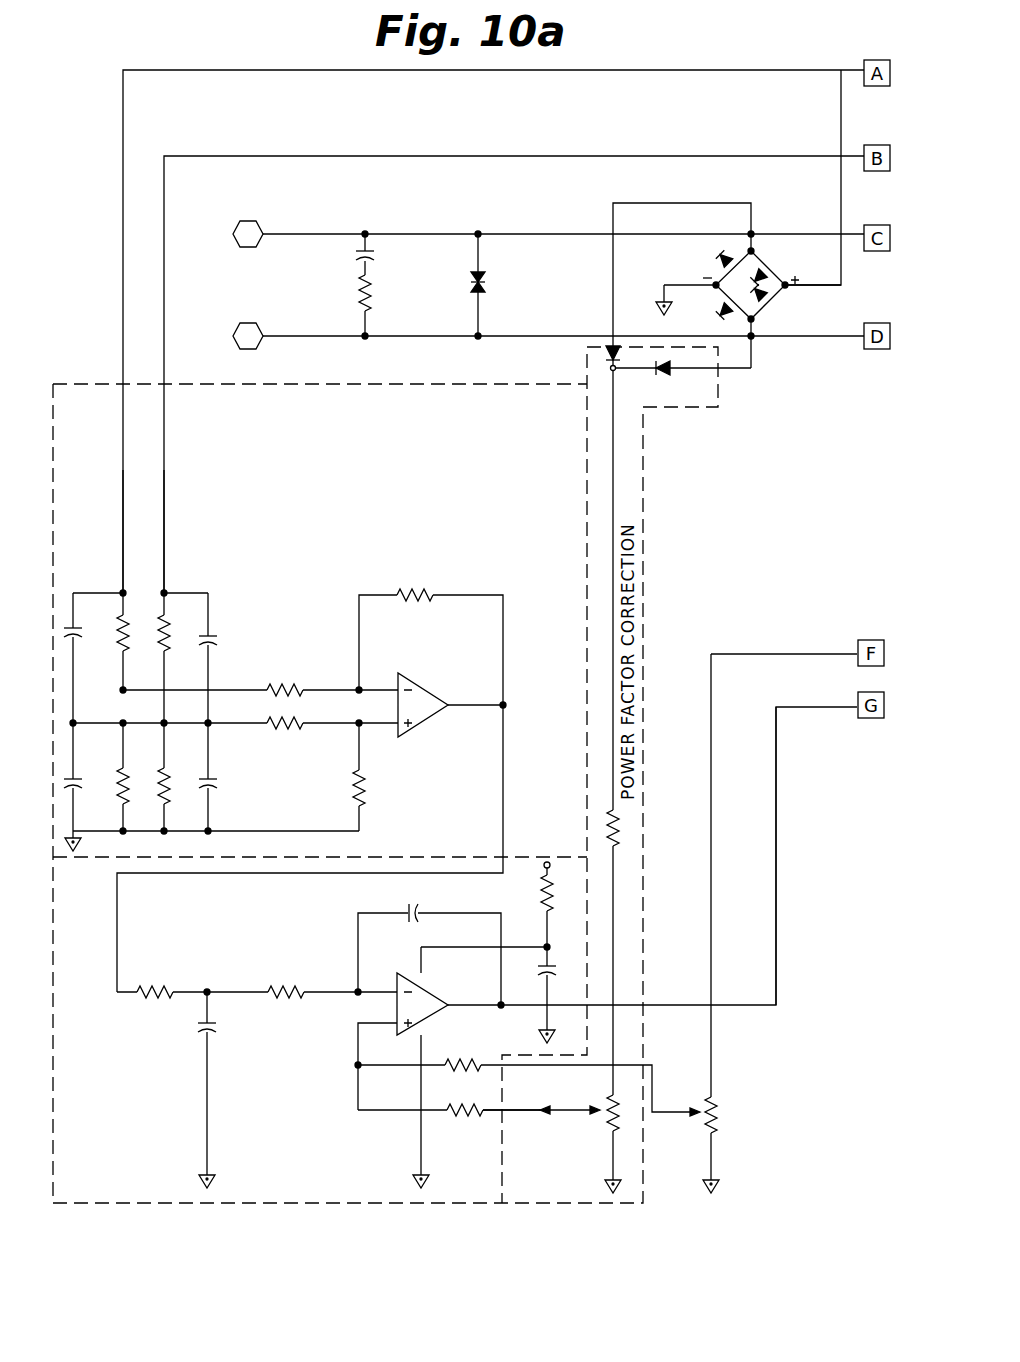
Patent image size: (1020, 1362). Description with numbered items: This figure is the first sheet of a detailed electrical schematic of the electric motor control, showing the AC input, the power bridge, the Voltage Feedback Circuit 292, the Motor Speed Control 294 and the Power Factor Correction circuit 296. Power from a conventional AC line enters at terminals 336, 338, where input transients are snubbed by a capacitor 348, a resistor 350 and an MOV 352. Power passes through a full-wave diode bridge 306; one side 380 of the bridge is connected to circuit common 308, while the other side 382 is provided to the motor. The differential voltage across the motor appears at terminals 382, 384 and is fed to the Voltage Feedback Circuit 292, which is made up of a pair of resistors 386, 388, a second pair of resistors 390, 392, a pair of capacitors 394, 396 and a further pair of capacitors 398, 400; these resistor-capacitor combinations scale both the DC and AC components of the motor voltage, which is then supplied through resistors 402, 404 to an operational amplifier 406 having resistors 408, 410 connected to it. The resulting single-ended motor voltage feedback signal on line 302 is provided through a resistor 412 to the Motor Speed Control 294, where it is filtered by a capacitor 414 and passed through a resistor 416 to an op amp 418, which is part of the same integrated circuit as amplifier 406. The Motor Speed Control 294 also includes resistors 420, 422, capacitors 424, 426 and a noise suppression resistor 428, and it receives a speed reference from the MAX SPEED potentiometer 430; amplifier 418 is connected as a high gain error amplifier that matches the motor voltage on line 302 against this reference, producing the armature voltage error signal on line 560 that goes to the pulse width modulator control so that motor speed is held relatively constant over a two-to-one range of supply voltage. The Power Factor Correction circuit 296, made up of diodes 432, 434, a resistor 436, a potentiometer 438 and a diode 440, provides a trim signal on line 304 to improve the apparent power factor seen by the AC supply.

The Voltage Feedback Circuit 292 is at (520, 574).
The Motor Speed Control circuit 294 is at (318, 1185).
The Power Factor Correction circuit 296 is at (574, 1185).
The line 302 is at (503, 818).
The line 304 is at (490, 1112).
The full-wave diode bridge 306 is at (790, 308).
The circuit common 308 is at (658, 308).
The terminal 336 is at (262, 246).
The terminal 338 is at (258, 328).
The capacitor 348 is at (371, 246).
The resistor 350 is at (372, 307).
The MOV 352 is at (486, 286).
The side of bridge 380 is at (672, 285).
The side of bridge / terminal 382 is at (824, 285).
The terminal 384 is at (164, 497).
The resistor 386 is at (118, 640).
The resistor 388 is at (170, 640).
The resistor 390 is at (142, 768).
The resistor 392 is at (184, 768).
The capacitor 394 is at (80, 625).
The capacitor 396 is at (212, 646).
The capacitor 398 is at (92, 770).
The capacitor 400 is at (212, 782).
The resistor 402 is at (286, 684).
The resistor 404 is at (296, 729).
The operational amplifier 406 is at (420, 678).
The resistor 408 is at (432, 598).
The resistor 410 is at (366, 790).
The resistor 412 is at (172, 962).
The capacitor 414 is at (214, 1024).
The resistor 416 is at (282, 984).
The op amp 418 is at (430, 988).
The resistor 420 is at (470, 1062).
The resistor 422 is at (470, 1087).
The capacitor 424 is at (406, 906).
The capacitor 426 is at (544, 974).
The noise suppression resistor 428 is at (546, 902).
The MAX SPEED potentiometer 430 is at (920, 1030).
The diode 432 is at (606, 353).
The diode 434 is at (668, 378).
The resistor 436 is at (620, 836).
The potentiometer 438 is at (608, 1098).
The diode 440 is at (552, 1116).
The line 560 is at (776, 920).